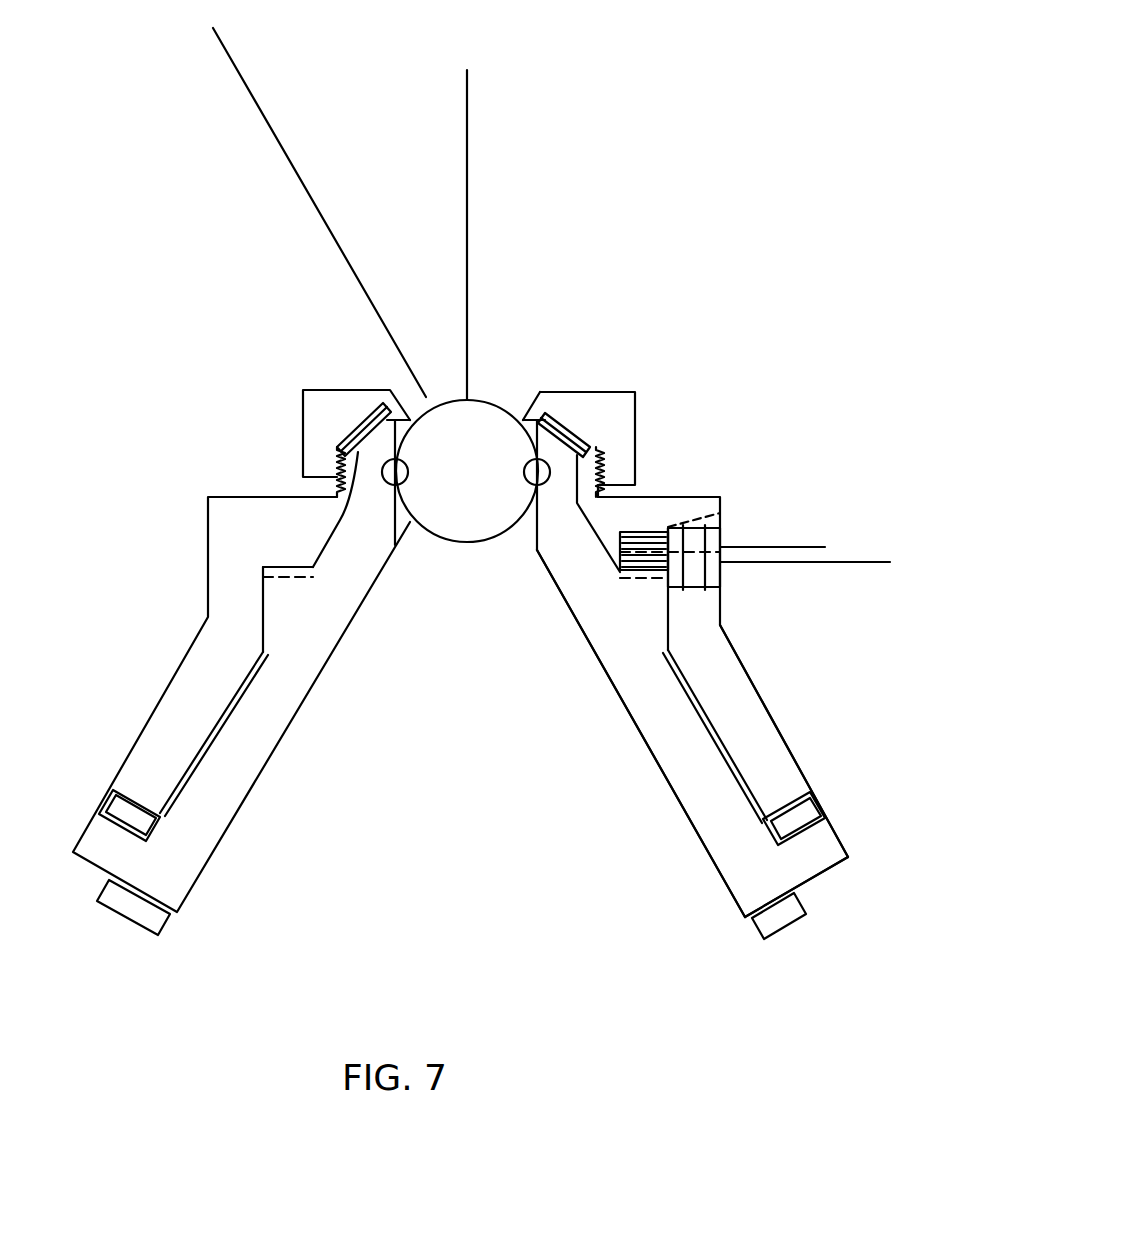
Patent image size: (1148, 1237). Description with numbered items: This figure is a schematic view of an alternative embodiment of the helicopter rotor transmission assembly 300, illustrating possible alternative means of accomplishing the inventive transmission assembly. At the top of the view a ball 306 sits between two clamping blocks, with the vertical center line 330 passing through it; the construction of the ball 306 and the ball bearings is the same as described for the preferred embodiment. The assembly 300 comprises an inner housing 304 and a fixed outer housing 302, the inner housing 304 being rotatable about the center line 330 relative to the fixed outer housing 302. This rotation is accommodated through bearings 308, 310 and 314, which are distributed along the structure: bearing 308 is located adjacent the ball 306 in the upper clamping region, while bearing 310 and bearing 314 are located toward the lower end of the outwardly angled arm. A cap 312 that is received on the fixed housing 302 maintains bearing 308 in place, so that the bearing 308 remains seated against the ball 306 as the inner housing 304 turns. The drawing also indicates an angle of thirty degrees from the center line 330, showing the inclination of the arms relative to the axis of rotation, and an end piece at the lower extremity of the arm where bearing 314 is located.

The clamp assembly 300 is at (717, 443).
The fixed outer housing 302 is at (753, 712).
The inner housing 304 is at (733, 870).
The ball 306 is at (467, 542).
The bearing 308 is at (563, 417).
The bearing 310 is at (817, 803).
The cap 312 is at (303, 400).
The bearing 314 is at (778, 920).
The center line 330 is at (472, 180).